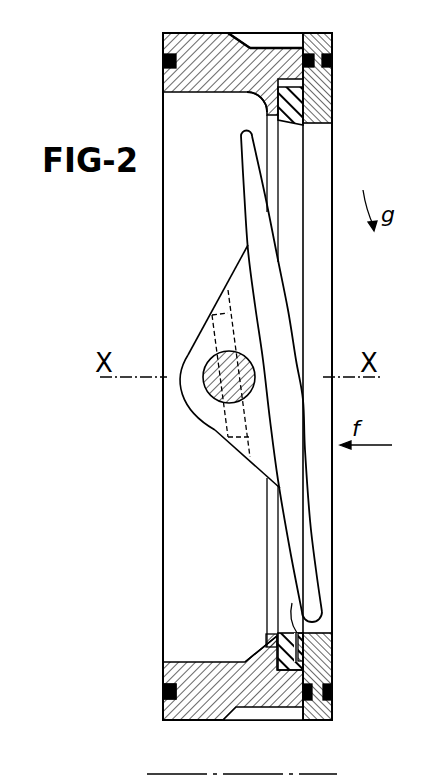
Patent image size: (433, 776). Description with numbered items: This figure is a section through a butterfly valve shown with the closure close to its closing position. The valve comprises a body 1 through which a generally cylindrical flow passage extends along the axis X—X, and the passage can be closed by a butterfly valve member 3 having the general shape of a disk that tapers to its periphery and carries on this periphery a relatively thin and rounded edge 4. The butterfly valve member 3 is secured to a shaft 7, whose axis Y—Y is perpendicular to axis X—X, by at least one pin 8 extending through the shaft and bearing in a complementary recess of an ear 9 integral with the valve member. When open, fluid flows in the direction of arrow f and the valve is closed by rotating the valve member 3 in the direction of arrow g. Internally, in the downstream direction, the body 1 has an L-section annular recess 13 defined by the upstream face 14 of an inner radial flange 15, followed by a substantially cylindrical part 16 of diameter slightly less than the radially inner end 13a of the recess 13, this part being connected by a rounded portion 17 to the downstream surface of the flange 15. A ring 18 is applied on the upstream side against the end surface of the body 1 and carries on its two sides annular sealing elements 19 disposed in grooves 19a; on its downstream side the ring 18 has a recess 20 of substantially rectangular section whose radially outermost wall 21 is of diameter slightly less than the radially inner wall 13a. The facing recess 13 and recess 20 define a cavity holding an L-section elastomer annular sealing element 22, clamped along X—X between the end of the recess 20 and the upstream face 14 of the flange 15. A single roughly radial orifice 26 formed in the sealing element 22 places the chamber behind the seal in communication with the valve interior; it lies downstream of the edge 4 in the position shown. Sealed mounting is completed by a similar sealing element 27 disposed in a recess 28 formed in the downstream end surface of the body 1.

The body 1 is at (162, 670).
The butterfly valve member 3 is at (282, 348).
The edge 4 is at (323, 620).
The shaft 7 is at (206, 370).
The pin 8 is at (222, 325).
The ear 9 is at (262, 460).
The annular recess 13 is at (330, 676).
The radially inner end of the recess 13a is at (300, 672).
The upstream face 14 is at (276, 664).
The inner radial flange 15 is at (263, 650).
The cylindrical part 16 is at (181, 662).
The rounded portion 17 is at (258, 98).
The ring 18 is at (333, 88).
The annular sealing elements 19 is at (316, 53).
The grooves 19a is at (305, 62).
The recess 20 is at (300, 653).
The wall 21 is at (307, 658).
The annular sealing element 22 is at (270, 634).
The orifice 26 is at (291, 609).
The sealing element 27 is at (162, 688).
The recess 28 is at (162, 696).